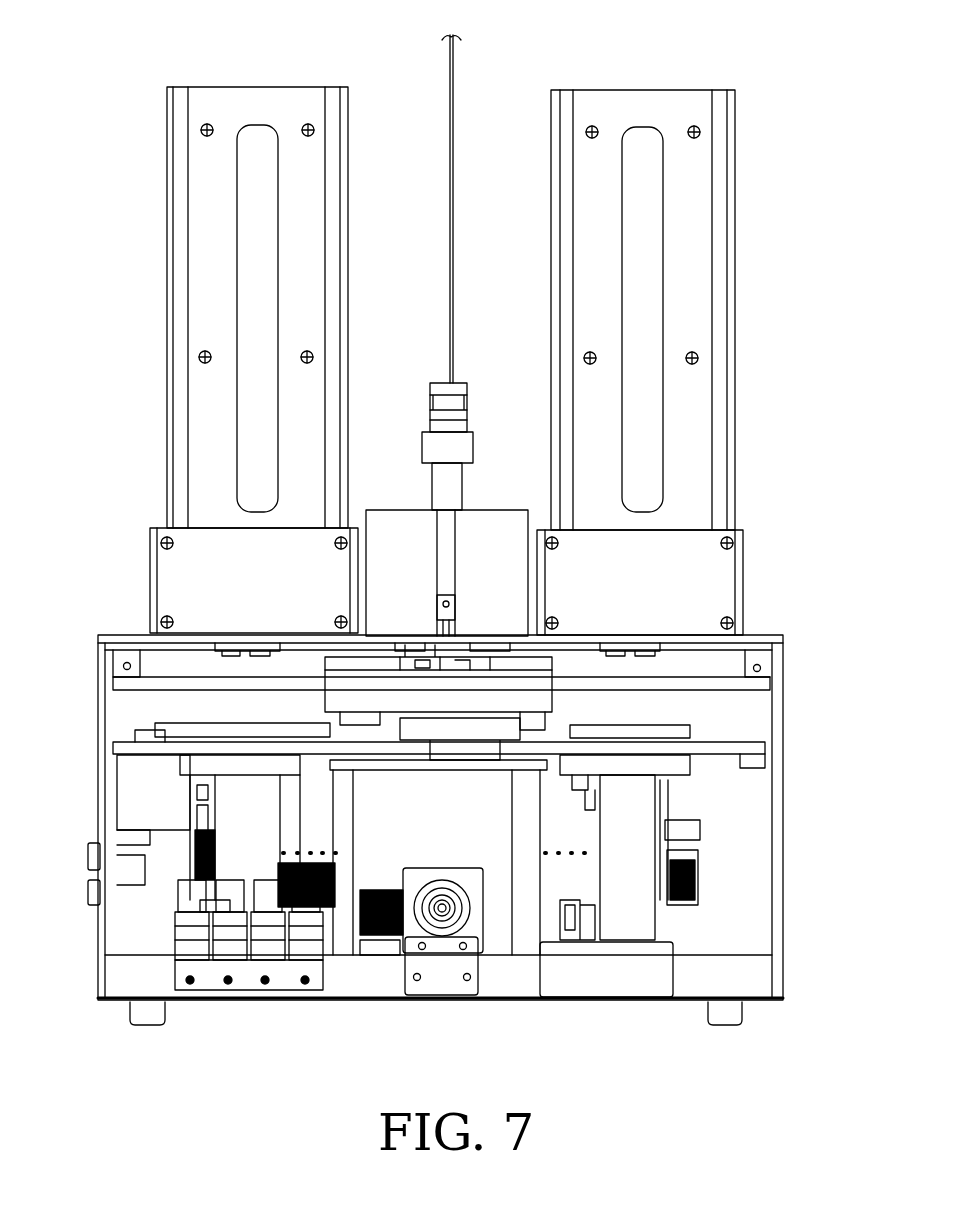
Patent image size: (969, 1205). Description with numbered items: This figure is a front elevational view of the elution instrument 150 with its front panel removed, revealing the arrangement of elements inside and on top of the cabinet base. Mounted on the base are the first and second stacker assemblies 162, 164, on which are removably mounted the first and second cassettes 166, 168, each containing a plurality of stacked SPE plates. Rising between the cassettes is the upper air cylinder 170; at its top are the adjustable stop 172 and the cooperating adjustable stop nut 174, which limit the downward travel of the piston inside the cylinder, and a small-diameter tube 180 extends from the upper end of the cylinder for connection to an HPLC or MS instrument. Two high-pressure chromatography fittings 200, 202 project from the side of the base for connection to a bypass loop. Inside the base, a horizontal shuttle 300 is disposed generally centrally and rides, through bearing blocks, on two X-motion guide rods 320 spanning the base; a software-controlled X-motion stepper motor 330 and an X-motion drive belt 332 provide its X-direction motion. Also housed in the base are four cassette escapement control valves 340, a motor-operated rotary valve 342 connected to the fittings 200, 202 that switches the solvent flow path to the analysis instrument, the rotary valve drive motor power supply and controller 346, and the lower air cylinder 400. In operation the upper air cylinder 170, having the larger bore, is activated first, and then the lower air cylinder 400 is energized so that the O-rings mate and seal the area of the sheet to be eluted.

The elution instrument 150 is at (776, 182).
The first stacker assembly 162 is at (190, 580).
The second stacker assembly 164 is at (712, 577).
The first cassette 166 is at (212, 266).
The second cassette 168 is at (690, 266).
The upper air cylinder 170 is at (396, 527).
The adjustable stop 172 is at (465, 448).
The adjustable stop nut 174 is at (443, 423).
The tube 180 is at (453, 87).
The high-pressure chromatography fitting 200 is at (88, 856).
The high-pressure chromatography fitting 202 is at (88, 892).
The horizontal shuttle 300 is at (491, 688).
The X-motion guide rods 320 is at (705, 683).
The X-motion stepper motor 330 is at (137, 780).
The X-motion drive belt 332 is at (740, 708).
The cassette escapement control valves 340 is at (190, 985).
The rotary valve 342 is at (447, 935).
The rotary valve drive motor power supply and controller 346 is at (604, 970).
The lower air cylinder 400 is at (392, 960).